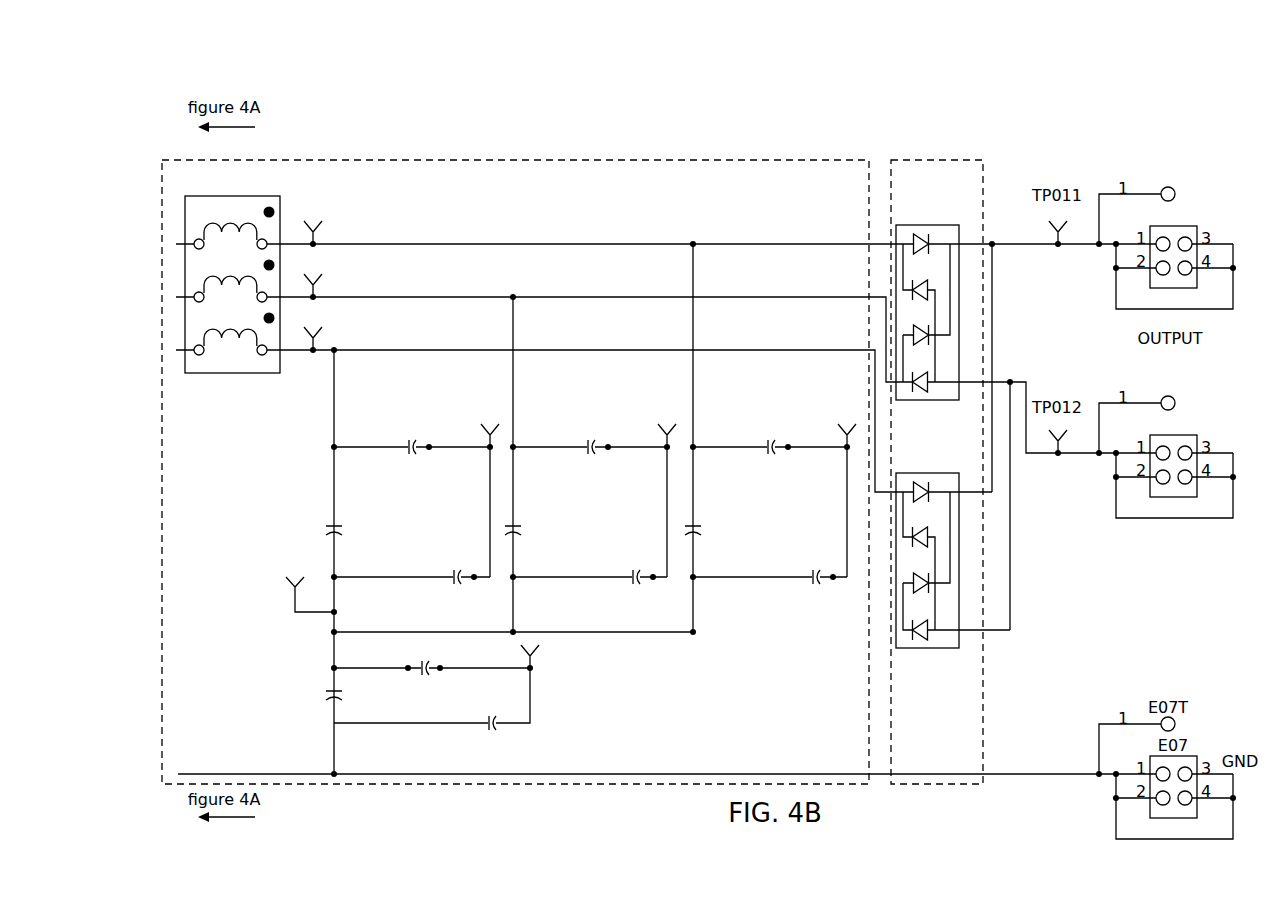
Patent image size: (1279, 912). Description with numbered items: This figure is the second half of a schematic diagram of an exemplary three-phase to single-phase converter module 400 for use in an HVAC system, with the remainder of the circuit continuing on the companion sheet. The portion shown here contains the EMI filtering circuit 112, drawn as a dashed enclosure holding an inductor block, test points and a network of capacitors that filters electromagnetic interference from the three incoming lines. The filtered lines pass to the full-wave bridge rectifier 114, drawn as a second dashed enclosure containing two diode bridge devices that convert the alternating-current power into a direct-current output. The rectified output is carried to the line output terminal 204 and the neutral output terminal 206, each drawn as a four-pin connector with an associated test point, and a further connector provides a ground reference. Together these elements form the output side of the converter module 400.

The three-phase to single-phase converter module 400 is at (272, 69).
The EMI filtering circuit 112 is at (487, 158).
The full-wave bridge rectifier 114 is at (921, 158).
The line output terminal 204 is at (1194, 224).
The neutral output terminal 206 is at (1194, 436).